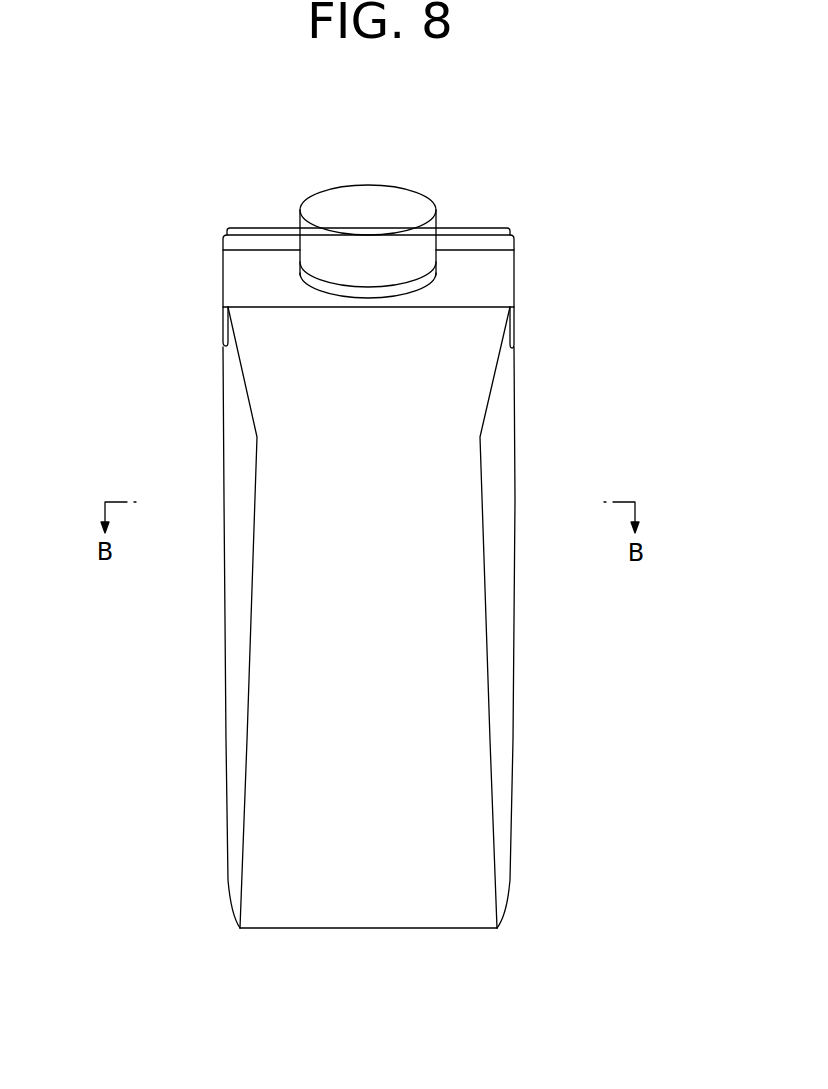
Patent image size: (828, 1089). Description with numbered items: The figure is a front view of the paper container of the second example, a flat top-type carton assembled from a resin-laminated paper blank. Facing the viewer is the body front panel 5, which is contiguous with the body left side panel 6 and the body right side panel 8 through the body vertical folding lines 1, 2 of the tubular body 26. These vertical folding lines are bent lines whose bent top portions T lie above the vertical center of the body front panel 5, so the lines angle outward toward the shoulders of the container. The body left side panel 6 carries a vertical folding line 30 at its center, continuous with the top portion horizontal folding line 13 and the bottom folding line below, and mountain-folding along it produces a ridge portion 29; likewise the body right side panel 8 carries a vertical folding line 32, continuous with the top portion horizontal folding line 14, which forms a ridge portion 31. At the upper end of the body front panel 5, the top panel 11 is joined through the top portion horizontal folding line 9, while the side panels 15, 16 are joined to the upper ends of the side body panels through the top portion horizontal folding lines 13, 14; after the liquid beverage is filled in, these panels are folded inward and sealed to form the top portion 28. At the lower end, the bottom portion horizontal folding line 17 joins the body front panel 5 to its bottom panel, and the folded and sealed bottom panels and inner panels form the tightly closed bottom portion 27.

The body vertical folding line 1 is at (489, 720).
The body vertical folding line 2 is at (248, 720).
The body front panel 5 is at (386, 570).
The body left side panel 6 is at (236, 610).
The body right side panel 8 is at (502, 611).
The top portion horizontal folding line 9 is at (413, 308).
The top panel 11 is at (500, 285).
The top portion horizontal folding line 13 is at (223, 257).
The top portion horizontal folding line 14 is at (516, 255).
The side panel 15 is at (223, 326).
The side panel 16 is at (516, 325).
The bottom portion horizontal folding line 17 is at (283, 929).
The tubular body 26 is at (386, 570).
The bottom portion 27 is at (375, 930).
The top portion 28 is at (468, 210).
The ridge portion 29 is at (223, 470).
The vertical folding line 30 is at (223, 574).
The ridge portion 31 is at (515, 472).
The vertical folding line 32 is at (515, 577).
The bent top portion T is at (258, 437).